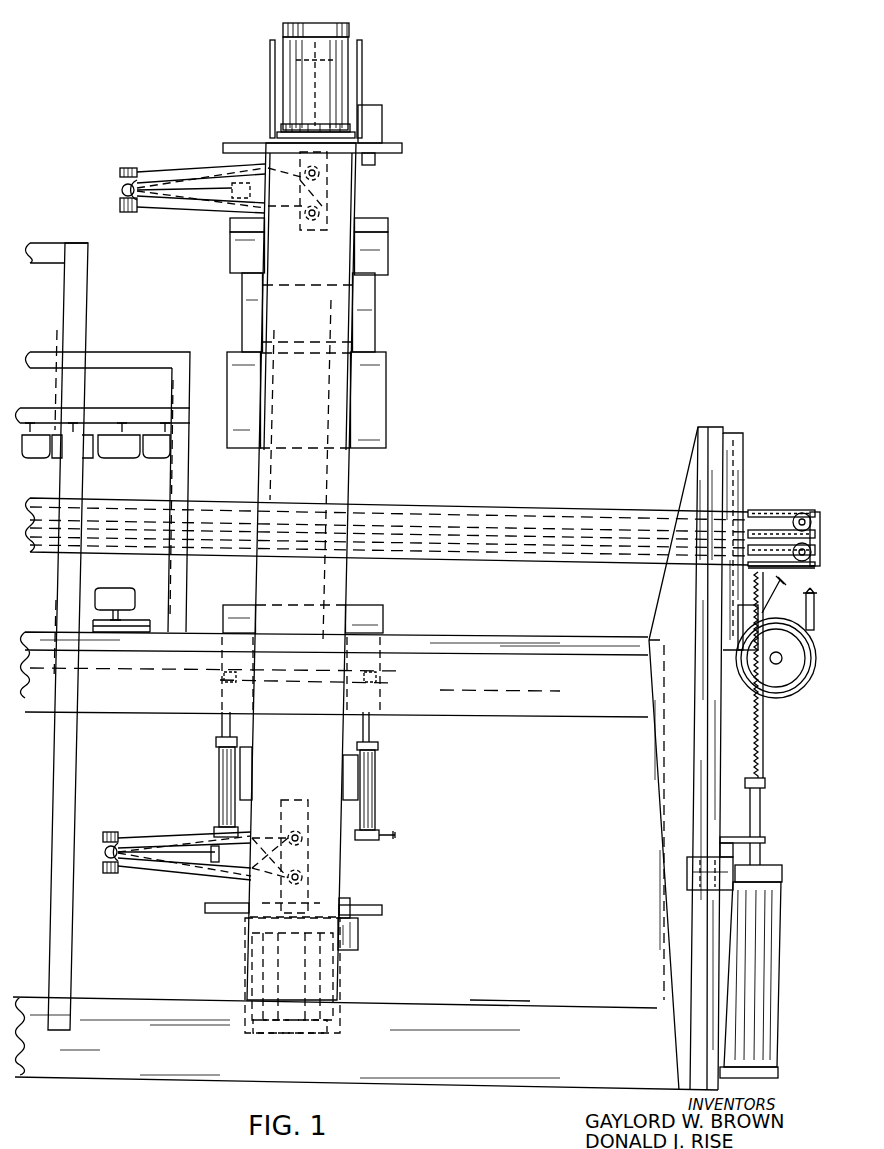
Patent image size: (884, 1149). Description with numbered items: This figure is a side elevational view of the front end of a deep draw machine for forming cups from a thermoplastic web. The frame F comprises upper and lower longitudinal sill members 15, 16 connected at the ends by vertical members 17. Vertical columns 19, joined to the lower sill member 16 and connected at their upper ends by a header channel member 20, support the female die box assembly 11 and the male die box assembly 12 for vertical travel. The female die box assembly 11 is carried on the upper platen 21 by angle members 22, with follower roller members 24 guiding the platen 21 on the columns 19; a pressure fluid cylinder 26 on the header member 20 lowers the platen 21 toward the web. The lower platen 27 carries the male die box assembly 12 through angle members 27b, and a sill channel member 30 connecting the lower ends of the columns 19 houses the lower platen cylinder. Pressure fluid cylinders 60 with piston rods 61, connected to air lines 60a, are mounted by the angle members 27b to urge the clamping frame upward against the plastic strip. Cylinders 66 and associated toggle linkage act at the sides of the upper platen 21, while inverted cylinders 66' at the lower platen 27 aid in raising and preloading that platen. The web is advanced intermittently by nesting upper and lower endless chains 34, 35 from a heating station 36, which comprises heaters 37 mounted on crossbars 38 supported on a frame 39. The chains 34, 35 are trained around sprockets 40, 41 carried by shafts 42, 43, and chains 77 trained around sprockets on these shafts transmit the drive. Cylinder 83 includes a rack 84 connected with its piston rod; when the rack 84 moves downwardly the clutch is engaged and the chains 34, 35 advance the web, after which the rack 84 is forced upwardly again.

The female die box assembly 11 is at (394, 410).
The male die box assembly 12 is at (386, 617).
The upper longitudinal sill member 15 is at (552, 698).
The lower longitudinal sill member 16 is at (530, 1003).
The vertical member 17 is at (658, 948).
The vertical column 19 is at (352, 484).
The header channel member 20 is at (362, 80).
The upper platen 21 is at (390, 265).
The angle member 22 is at (378, 326).
The follower roller member 24 is at (388, 220).
The pressure fluid cylinder 26 is at (340, 35).
The lower platen 27 is at (358, 787).
The angle member 27b is at (222, 723).
The sill channel member 30 is at (344, 976).
The upper endless chain 34 is at (752, 511).
The lower endless chain 35 is at (774, 530).
The heating station 36 is at (133, 406).
The heater 37 is at (158, 455).
The crossbar 38 is at (97, 410).
The frame 39 is at (148, 355).
The sprocket 40 is at (803, 513).
The sprocket 41 is at (812, 545).
The shaft 42 is at (810, 520).
The shaft 43 is at (806, 566).
The pressure fluid cylinder 60 is at (378, 758).
The line 60a is at (389, 838).
The piston rod 61 is at (369, 730).
The cylinder 66 is at (221, 172).
The cylinder 66' is at (195, 832).
The chain 77 is at (810, 630).
The cylinder 83 is at (760, 944).
The rack 84 is at (658, 778).
The frame F is at (494, 1000).